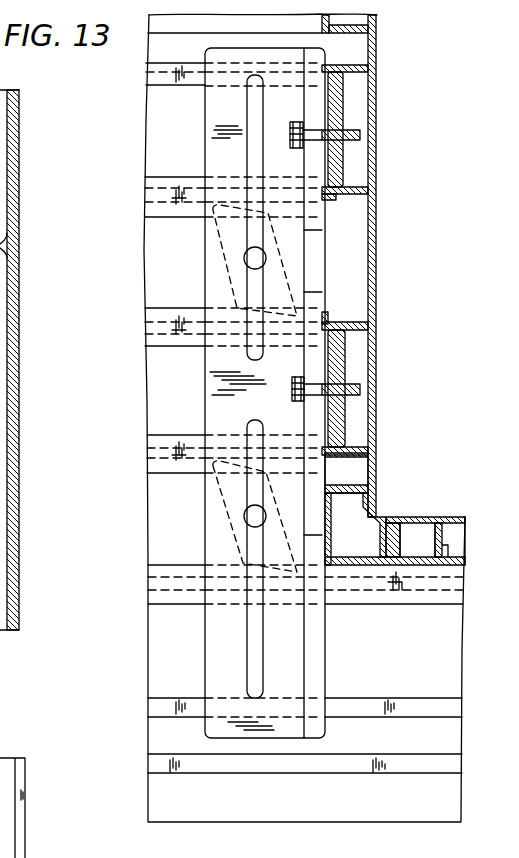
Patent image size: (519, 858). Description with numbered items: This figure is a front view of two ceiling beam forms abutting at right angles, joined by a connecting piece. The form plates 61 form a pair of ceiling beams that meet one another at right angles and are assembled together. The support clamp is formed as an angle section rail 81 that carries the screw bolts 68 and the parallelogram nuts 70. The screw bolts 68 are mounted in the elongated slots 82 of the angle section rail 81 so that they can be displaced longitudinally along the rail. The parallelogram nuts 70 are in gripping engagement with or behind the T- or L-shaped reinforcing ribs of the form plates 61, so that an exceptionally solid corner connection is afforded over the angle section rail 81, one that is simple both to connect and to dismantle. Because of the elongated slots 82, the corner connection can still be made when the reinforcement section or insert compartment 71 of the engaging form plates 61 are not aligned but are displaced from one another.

The form plate 61 is at (26, 283).
The insert compartment 71 is at (357, 233).
The angle section rail 81 is at (215, 407).
The elongated slot 82 is at (253, 103).
The parallelogram nut 70 is at (212, 237).
The screw bolt 68 is at (250, 262).